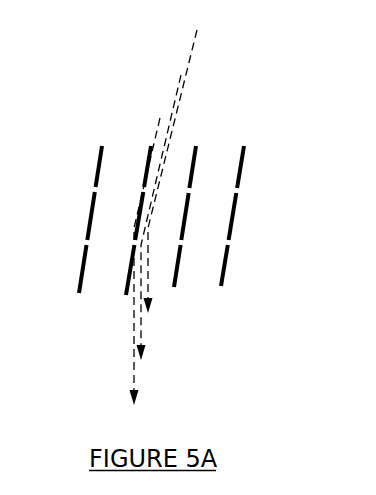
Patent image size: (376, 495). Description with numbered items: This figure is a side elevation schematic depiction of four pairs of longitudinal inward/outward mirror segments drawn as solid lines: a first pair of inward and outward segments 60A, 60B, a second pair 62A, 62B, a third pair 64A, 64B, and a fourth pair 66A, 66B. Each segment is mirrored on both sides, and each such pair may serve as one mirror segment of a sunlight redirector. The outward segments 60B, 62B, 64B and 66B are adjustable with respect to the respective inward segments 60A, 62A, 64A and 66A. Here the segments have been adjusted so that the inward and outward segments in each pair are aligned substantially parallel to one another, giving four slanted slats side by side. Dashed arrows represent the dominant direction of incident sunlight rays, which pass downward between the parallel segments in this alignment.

The inward mirror segment 60A is at (79, 293).
The outward mirror segment 60B is at (102, 146).
The inward mirror segment 62A is at (126, 295).
The outward mirror segment 62B is at (151, 146).
The inward mirror segment 64A is at (174, 287).
The outward mirror segment 64B is at (221, 130).
The inward mirror segment 66A is at (221, 286).
The outward mirror segment 66B is at (244, 146).